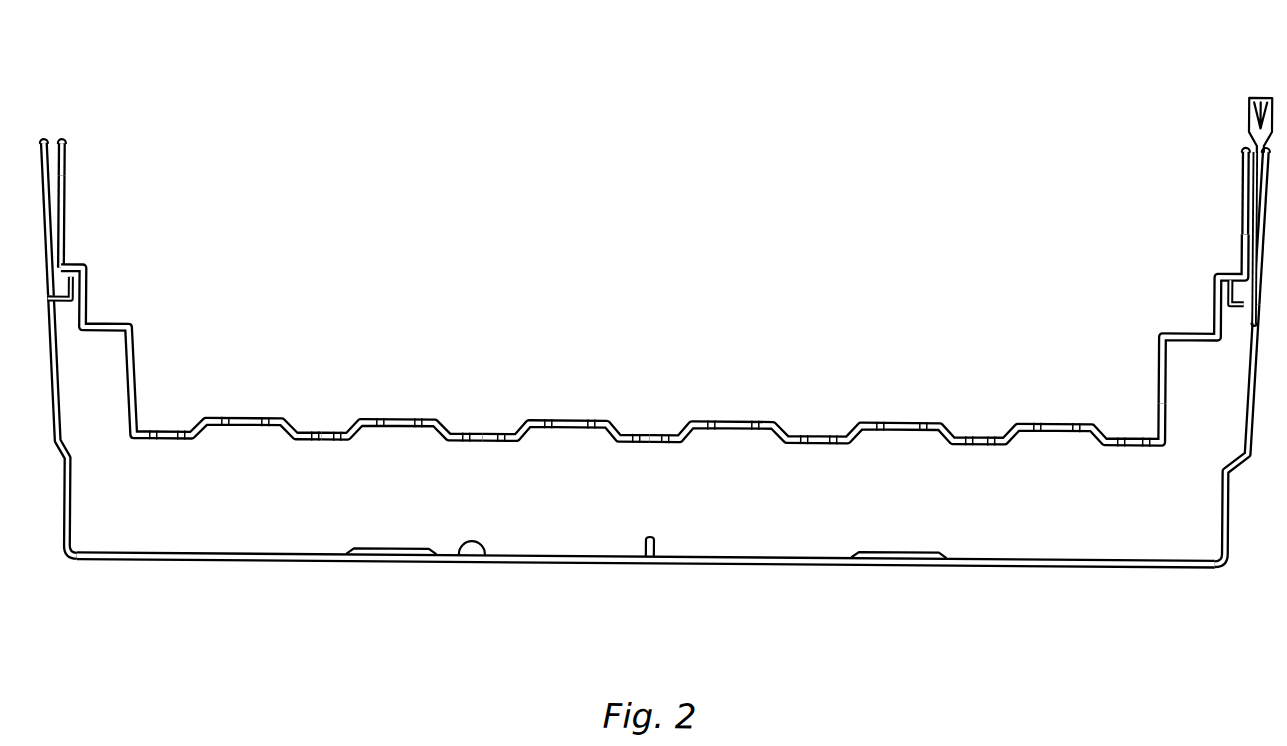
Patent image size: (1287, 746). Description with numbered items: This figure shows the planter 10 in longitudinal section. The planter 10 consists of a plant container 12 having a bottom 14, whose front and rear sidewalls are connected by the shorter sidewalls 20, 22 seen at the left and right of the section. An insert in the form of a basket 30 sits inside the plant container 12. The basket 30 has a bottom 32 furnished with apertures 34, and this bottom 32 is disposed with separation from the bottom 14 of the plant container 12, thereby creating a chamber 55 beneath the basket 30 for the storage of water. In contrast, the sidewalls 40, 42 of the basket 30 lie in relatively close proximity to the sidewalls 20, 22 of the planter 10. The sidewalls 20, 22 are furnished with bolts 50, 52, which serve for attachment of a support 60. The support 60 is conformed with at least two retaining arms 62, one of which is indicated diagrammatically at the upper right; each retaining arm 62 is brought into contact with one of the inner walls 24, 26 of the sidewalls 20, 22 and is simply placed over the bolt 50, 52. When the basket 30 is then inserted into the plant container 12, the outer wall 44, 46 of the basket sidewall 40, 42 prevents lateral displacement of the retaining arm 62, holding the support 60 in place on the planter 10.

The planter 10 is at (661, 363).
The plant container 12 is at (613, 578).
The bottom 14 is at (463, 556).
The sidewall 20 is at (62, 532).
The sidewall 22 is at (1230, 526).
The inner wall 24 is at (50, 185).
The inner wall 26 is at (1247, 252).
The basket 30 is at (744, 402).
The bottom 32 is at (576, 420).
The aperture 34 is at (421, 420).
The sidewall 40 is at (67, 239).
The sidewall 42 is at (1240, 220).
The outer wall 44 is at (56, 147).
The outer wall 46 is at (1247, 176).
The bolt 50 is at (62, 317).
The bolt 52 is at (1234, 326).
The chamber 55 is at (810, 517).
The support 60 is at (1217, 82).
The retaining arm 62 is at (1250, 144).